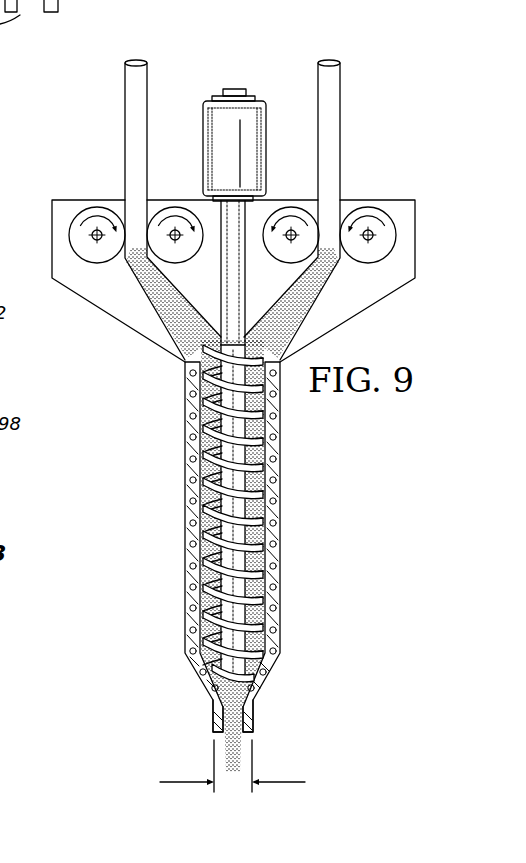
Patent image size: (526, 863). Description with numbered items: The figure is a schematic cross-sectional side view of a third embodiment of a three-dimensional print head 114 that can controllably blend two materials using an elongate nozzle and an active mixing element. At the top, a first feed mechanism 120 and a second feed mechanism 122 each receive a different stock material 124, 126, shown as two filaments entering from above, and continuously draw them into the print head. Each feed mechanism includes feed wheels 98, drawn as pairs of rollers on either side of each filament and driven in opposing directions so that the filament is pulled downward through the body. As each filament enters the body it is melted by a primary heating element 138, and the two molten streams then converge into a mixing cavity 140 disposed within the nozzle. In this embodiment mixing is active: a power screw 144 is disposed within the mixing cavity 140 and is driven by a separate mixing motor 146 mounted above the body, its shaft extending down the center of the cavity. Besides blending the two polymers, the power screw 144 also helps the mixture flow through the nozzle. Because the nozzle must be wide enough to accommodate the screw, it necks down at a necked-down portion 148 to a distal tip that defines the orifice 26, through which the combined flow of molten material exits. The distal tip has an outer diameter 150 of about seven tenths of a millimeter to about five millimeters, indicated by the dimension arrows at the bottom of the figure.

The print head 114 is at (356, 37).
The mixing motor 146 is at (203, 118).
The first stock material 124 is at (125, 108).
The second stock material 126 is at (340, 137).
The first feed mechanism 120 is at (113, 189).
The second feed mechanism 122 is at (352, 189).
The feed wheels 98 is at (69, 237).
The primary heating element 138 is at (184, 373).
The mixing cavity 140 is at (192, 482).
The power screw 144 is at (247, 522).
The orifice 26 is at (230, 712).
The necked-down portion 148 is at (253, 720).
The outer diameter 150 is at (292, 782).